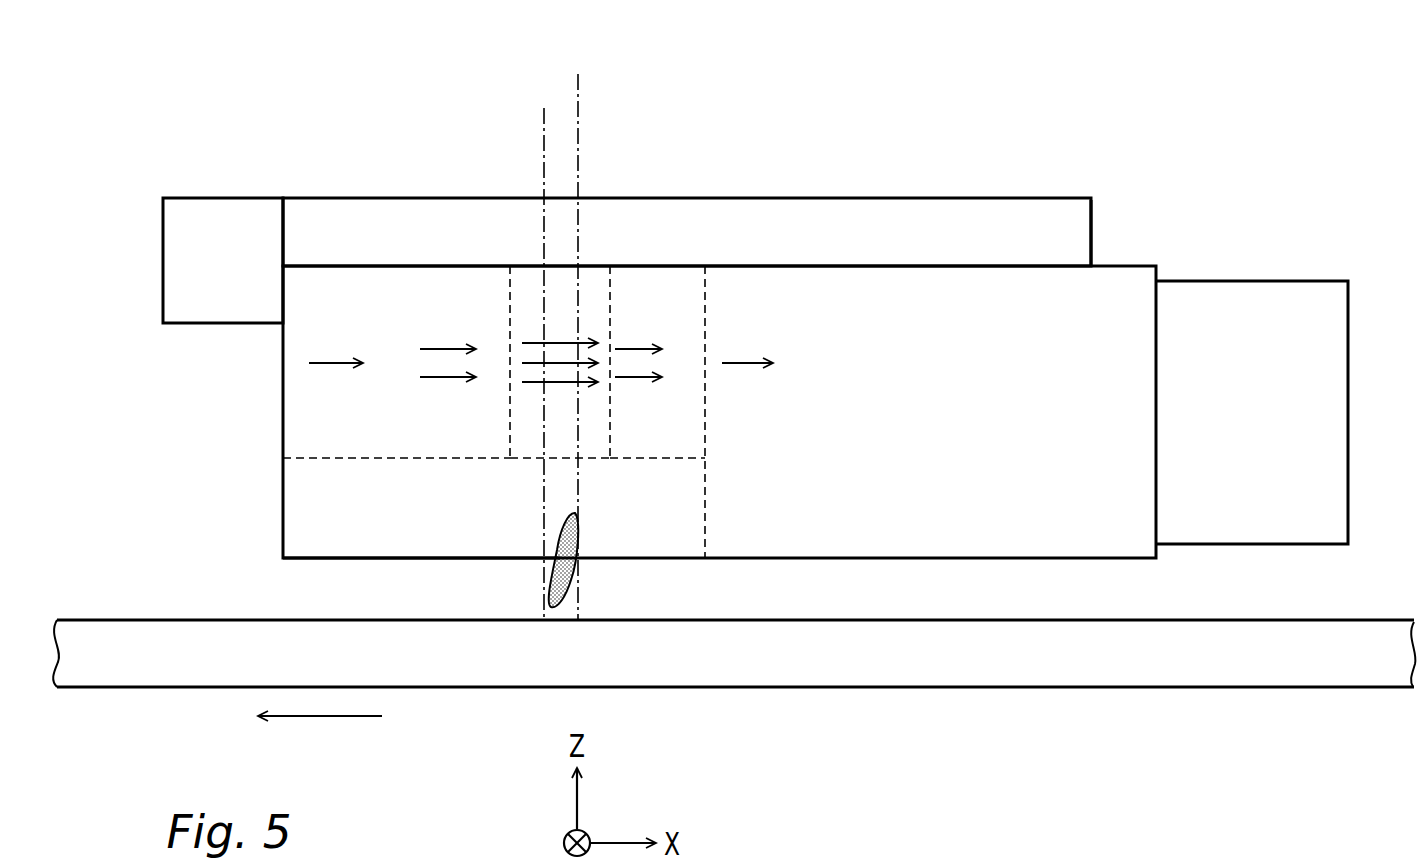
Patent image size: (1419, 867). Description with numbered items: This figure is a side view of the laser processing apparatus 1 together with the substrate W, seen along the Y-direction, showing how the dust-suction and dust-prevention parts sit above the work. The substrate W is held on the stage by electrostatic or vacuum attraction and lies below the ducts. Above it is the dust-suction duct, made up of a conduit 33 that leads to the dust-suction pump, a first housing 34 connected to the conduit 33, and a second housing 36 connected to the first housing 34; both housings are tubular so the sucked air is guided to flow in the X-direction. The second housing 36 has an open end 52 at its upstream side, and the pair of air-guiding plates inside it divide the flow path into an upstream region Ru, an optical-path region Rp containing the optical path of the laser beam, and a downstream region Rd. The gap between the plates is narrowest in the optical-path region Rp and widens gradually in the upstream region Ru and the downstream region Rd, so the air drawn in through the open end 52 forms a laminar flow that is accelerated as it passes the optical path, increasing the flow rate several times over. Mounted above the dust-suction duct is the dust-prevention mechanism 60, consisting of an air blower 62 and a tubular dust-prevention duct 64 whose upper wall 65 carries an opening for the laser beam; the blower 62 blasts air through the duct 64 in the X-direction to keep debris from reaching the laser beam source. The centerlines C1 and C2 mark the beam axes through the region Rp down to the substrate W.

The laser processing apparatus 1 is at (340, 130).
The dust-prevention mechanism 60 is at (835, 166).
The air blower 62 is at (231, 198).
The dust-prevention duct 64 is at (679, 198).
The upper wall 65 is at (1093, 234).
The first housing 34 is at (938, 560).
The second housing 36 is at (443, 559).
The conduit 33 is at (1250, 546).
The open end 52 is at (268, 375).
The upstream region Ru is at (410, 437).
The optical-path region Rp is at (527, 437).
The downstream region Rd is at (648, 437).
The center line C1 is at (544, 345).
The center line C2 is at (578, 328).
The substrate W is at (1165, 689).